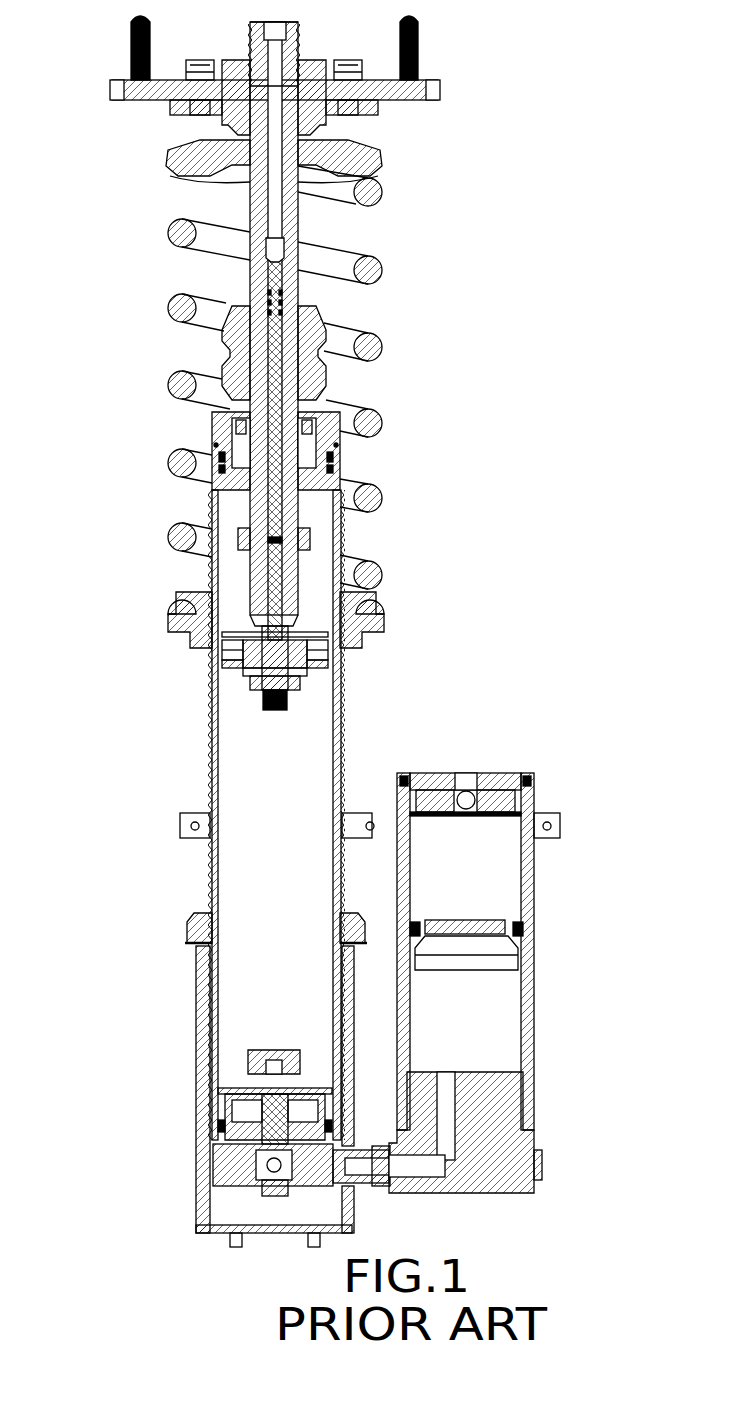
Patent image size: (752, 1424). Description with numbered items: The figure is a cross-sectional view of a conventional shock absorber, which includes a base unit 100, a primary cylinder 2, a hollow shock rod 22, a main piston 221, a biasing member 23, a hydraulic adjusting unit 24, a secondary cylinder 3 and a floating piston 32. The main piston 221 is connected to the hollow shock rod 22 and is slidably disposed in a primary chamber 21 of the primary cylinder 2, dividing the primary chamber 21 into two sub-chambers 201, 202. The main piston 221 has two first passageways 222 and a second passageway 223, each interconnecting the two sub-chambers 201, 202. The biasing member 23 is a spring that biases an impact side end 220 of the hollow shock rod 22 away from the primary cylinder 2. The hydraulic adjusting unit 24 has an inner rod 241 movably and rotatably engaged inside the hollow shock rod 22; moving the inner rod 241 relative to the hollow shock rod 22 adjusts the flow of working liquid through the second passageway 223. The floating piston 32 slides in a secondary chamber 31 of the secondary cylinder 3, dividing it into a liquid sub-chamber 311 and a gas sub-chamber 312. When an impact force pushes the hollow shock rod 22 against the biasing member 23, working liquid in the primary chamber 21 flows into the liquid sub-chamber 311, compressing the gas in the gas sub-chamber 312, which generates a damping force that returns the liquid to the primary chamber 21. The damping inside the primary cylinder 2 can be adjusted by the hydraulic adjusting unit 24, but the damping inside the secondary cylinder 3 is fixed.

The base unit 100 is at (357, 631).
The primary cylinder 2 is at (286, 631).
The primary chamber 21 is at (247, 738).
The hollow shock rod 22 is at (350, 324).
The biasing member 23 is at (368, 279).
The hydraulic adjusting unit 24 is at (275, 360).
The inner rod 241 is at (275, 439).
The sub-chamber 201 is at (312, 565).
The sub-chamber 202 is at (250, 856).
The impact side end 220 is at (298, 47).
The main piston 221 is at (325, 660).
The first passageways 222 is at (233, 663).
The second passageway 223 is at (280, 712).
The secondary cylinder 3 is at (532, 983).
The secondary chamber 31 is at (500, 830).
The liquid sub-chamber 311 is at (515, 1025).
The gas sub-chamber 312 is at (485, 872).
The floating piston 32 is at (518, 953).